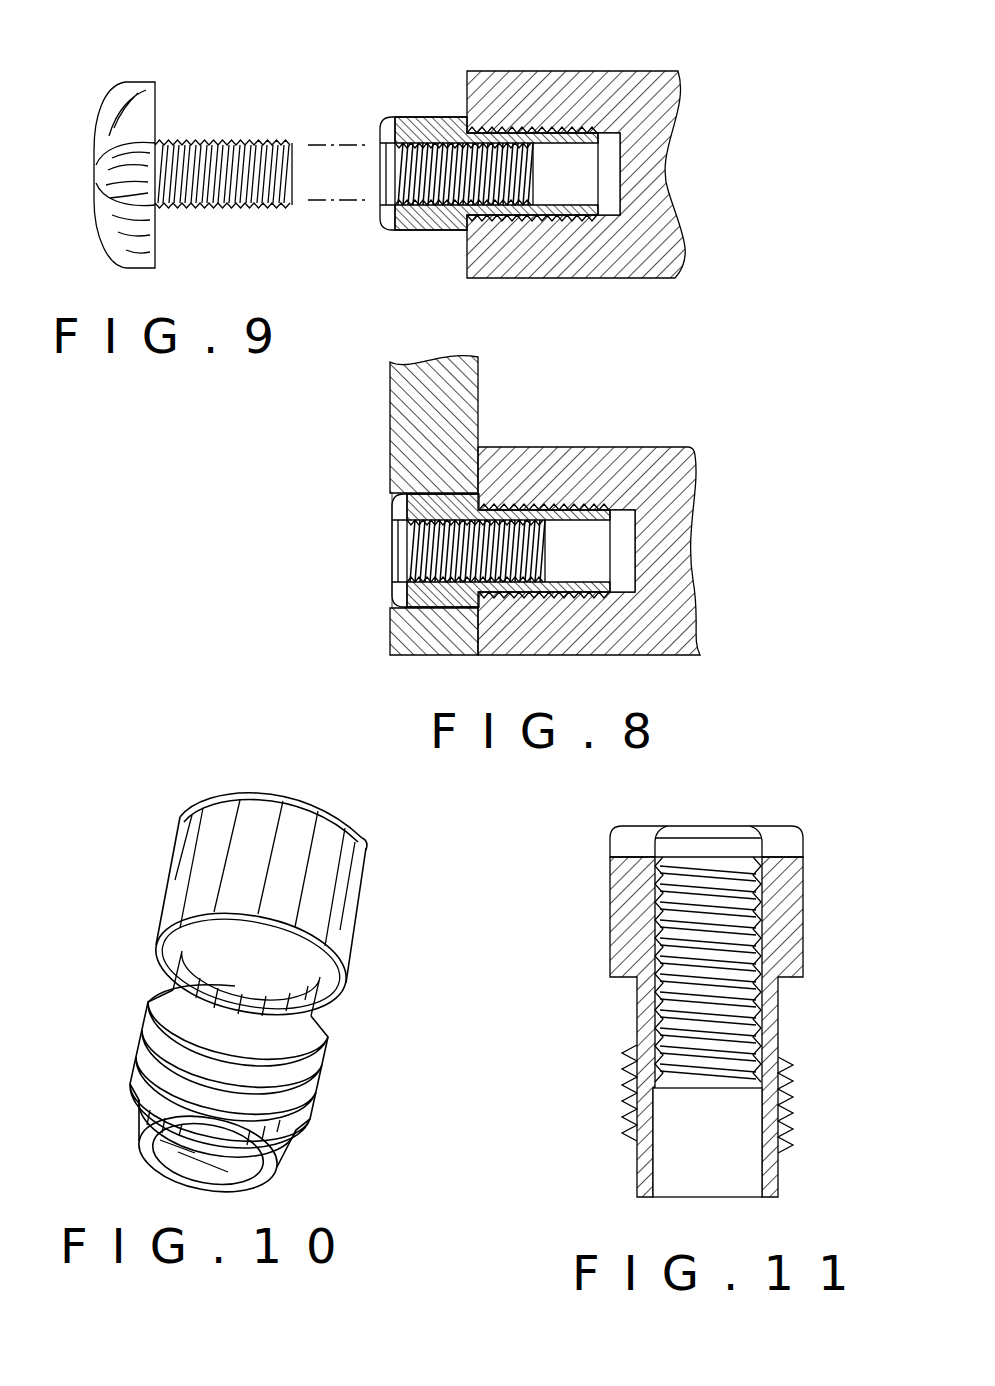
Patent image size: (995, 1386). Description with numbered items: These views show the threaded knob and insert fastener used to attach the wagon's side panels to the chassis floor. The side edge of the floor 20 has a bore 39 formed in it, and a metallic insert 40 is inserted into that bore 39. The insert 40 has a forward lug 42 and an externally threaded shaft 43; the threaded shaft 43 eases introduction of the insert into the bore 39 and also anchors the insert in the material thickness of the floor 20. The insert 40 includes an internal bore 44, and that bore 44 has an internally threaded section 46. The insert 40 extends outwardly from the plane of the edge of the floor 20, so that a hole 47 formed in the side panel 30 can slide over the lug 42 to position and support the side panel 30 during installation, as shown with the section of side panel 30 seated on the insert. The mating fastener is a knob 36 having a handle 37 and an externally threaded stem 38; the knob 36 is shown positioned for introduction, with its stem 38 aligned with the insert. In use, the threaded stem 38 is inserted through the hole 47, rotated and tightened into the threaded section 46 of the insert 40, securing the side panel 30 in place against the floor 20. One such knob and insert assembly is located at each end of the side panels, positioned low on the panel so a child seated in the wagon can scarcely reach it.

In FIG. 9, the floor 20 is at (599, 143).
In FIG. 8, the floor 20 is at (614, 532).
In FIG. 8, the side panel 30 is at (490, 398).
In FIG. 9, the knob 36 is at (173, 138).
In FIG. 9, the handle 37 is at (155, 107).
In FIG. 9, the externally threaded stem 38 is at (209, 143).
In FIG. 9, the bore 39 is at (612, 133).
In FIG. 8, the bore 39 is at (627, 585).
In FIG. 9, the insert 40 is at (471, 140).
In FIG. 8, the insert 40 is at (490, 539).
In FIG. 10, the insert 40 is at (224, 959).
In FIG. 11, the insert 40 is at (701, 976).
In FIG. 9, the forward lug 42 is at (405, 232).
In FIG. 8, the forward lug 42 is at (501, 550).
In FIG. 10, the forward lug 42 is at (282, 838).
In FIG. 11, the forward lug 42 is at (803, 950).
In FIG. 9, the externally threaded shaft 43 is at (505, 130).
In FIG. 8, the externally threaded shaft 43 is at (515, 600).
In FIG. 10, the externally threaded shaft 43 is at (261, 1094).
In FIG. 11, the externally threaded shaft 43 is at (793, 1115).
In FIG. 11, the internal bore 44 is at (702, 857).
In FIG. 9, the internally threaded section 46 is at (440, 142).
In FIG. 8, the internally threaded section 46 is at (447, 560).
In FIG. 11, the internally threaded section 46 is at (770, 879).
In FIG. 8, the hole 47 is at (398, 505).